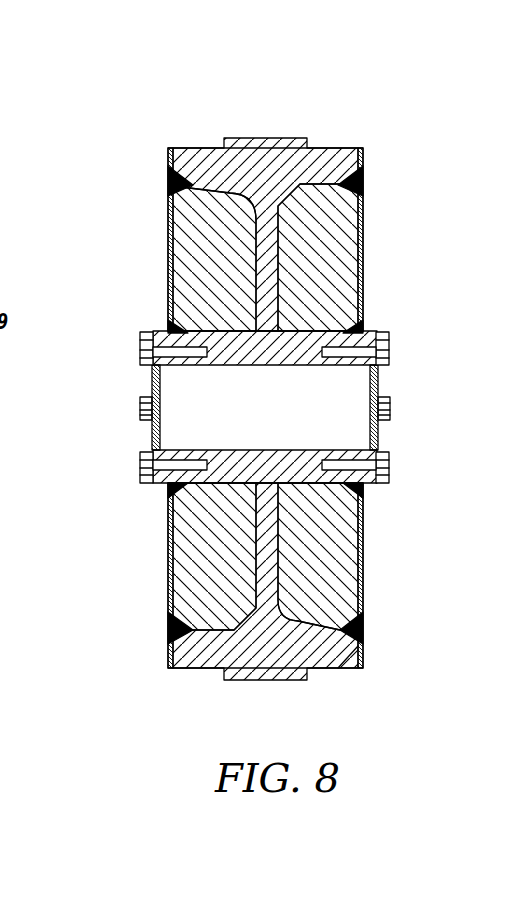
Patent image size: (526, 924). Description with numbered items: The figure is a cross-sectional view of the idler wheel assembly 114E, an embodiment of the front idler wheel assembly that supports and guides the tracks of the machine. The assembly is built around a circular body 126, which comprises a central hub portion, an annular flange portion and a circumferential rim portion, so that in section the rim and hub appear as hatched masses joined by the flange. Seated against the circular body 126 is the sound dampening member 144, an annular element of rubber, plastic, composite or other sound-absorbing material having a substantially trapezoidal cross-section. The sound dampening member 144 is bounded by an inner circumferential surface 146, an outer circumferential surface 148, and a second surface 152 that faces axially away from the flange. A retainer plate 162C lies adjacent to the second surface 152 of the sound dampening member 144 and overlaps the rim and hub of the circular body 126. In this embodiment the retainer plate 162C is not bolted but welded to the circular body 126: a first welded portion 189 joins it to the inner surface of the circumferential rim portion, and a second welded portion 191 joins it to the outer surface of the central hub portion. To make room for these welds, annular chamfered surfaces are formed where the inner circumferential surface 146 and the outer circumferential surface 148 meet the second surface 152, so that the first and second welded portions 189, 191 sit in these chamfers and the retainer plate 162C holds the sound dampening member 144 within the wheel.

The idler wheel assembly 114E is at (92, 120).
The outer circumferential surface 148 is at (198, 148).
The second surface 152 is at (168, 252).
The first welded portion 189 is at (168, 178).
The inner circumferential surface 146 is at (226, 314).
The second welded portion 191 is at (150, 333).
The sound dampening member 144 is at (187, 588).
The circular body 126 is at (220, 680).
The retainer plate 162C is at (166, 634).